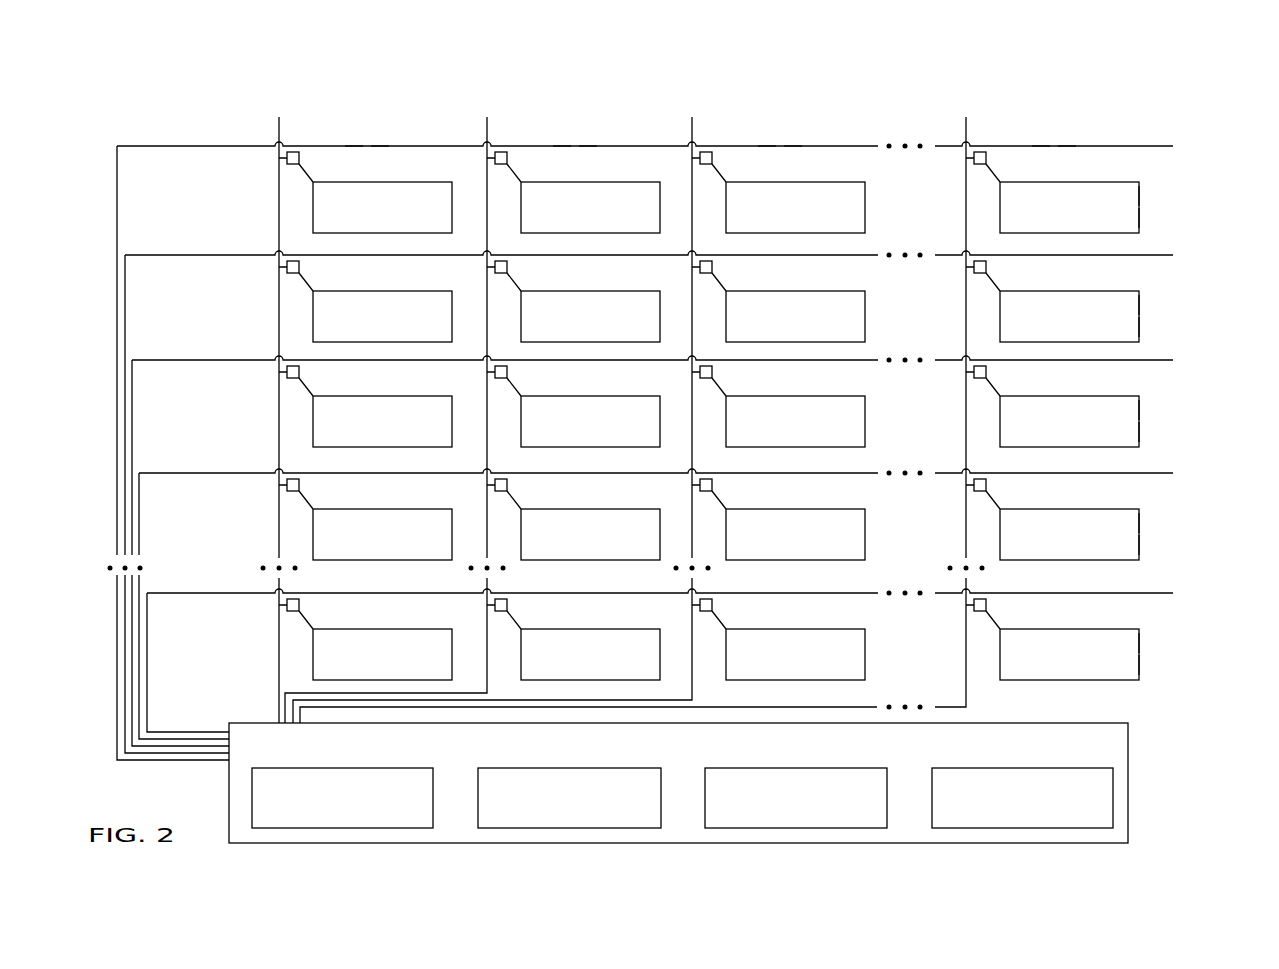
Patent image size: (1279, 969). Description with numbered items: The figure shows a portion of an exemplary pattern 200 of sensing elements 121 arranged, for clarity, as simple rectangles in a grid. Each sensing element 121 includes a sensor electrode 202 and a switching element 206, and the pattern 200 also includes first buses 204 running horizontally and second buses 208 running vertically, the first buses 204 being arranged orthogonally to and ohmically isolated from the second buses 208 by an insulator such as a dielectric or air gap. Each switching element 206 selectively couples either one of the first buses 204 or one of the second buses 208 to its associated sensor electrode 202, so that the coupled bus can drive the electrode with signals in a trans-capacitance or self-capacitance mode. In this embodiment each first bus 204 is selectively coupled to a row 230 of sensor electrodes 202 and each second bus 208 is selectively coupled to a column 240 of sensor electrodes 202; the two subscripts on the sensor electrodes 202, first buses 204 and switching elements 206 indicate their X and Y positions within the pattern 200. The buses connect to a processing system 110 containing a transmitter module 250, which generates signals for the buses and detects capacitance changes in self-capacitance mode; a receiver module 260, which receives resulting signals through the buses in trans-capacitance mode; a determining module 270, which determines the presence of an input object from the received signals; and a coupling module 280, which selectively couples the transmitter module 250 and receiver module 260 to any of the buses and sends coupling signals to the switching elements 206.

The pattern of sensing elements 200 is at (1150, 73).
The sensor electrode 202 is at (726, 431).
The first bus 204 is at (645, 434).
The switching element 206 is at (673, 389).
The second bus 208 is at (647, 402).
The sensing element 121 is at (788, 367).
The row of sensor electrodes 230 is at (1196, 439).
The column of sensor electrodes 240 is at (707, 110).
The processing system 110 is at (448, 751).
The transmitter module 250 is at (395, 819).
The receiver module 260 is at (587, 819).
The determining module 270 is at (848, 819).
The coupling module 280 is at (1037, 819).